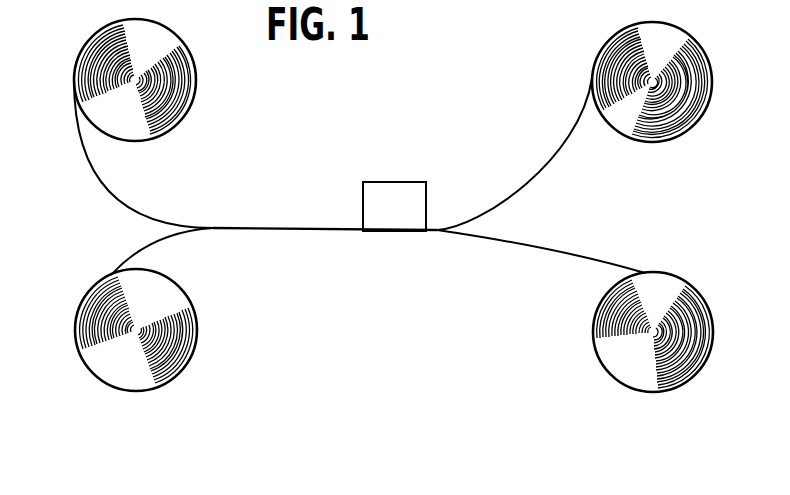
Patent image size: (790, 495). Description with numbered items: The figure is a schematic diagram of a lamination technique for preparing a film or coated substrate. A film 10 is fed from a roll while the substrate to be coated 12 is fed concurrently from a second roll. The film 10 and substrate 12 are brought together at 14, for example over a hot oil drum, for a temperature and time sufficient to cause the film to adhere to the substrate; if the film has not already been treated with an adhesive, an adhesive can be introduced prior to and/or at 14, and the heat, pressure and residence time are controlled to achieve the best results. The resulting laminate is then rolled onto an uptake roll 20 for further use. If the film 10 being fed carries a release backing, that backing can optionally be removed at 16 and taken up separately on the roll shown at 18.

The film 10 is at (698, 47).
The substrate to be coated 12 is at (650, 393).
The lamination point 14 is at (386, 182).
The release backing removal point 16 is at (214, 227).
The release backing uptake 18 is at (73, 73).
The uptake roll 20 is at (81, 352).